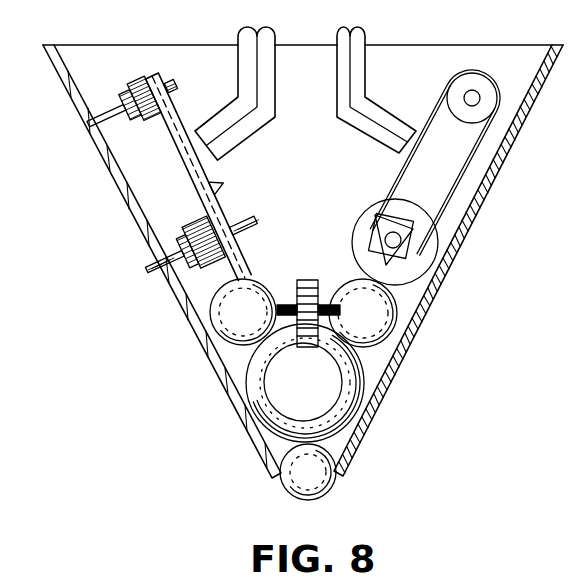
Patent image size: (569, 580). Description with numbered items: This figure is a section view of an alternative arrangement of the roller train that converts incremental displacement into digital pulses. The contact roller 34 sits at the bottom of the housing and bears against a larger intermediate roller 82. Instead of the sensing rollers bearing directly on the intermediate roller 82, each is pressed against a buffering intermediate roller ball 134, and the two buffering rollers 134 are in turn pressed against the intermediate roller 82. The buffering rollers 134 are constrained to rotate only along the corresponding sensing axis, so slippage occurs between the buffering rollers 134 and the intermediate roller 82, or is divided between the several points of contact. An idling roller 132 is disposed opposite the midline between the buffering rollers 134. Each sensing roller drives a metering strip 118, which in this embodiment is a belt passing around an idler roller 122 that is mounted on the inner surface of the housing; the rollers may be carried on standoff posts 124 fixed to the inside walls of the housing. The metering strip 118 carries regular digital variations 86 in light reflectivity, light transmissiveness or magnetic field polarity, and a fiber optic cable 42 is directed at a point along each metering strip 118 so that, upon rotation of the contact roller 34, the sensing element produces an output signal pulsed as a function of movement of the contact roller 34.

The contact roller 34 is at (313, 493).
The fiber optic cable 42 is at (232, 118).
The intermediate roller 82 is at (190, 228).
The digital variations 86 is at (228, 190).
The metering strip 118 is at (194, 184).
The idler roller 122 is at (150, 77).
The standoff post 124 is at (108, 124).
The idling roller 132 is at (304, 282).
The buffering intermediate roller ball 134 is at (223, 325).